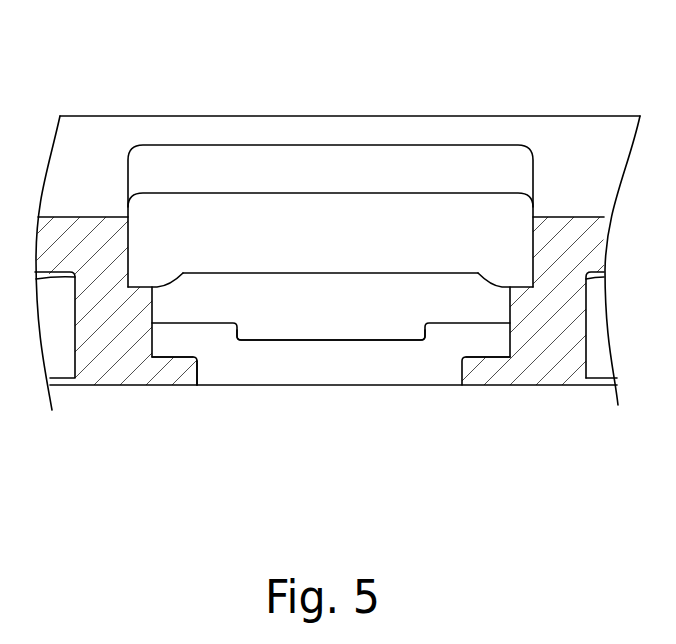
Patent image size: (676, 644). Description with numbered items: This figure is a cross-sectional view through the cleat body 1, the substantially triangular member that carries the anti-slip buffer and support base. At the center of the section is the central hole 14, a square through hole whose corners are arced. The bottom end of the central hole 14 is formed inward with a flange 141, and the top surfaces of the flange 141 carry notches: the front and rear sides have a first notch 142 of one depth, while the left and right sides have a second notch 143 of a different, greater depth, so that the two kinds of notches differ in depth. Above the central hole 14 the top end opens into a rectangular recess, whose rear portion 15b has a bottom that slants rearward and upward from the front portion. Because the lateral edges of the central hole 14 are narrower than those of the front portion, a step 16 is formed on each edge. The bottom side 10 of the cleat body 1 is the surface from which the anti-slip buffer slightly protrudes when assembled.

The cleat body 1 is at (558, 370).
The bottom side 10 is at (513, 385).
The central hole 14 is at (380, 373).
The flange 141 is at (200, 372).
The first notch 142 is at (325, 340).
The second notch 143 is at (177, 357).
The rear portion 15b is at (355, 215).
The step 16 is at (140, 287).